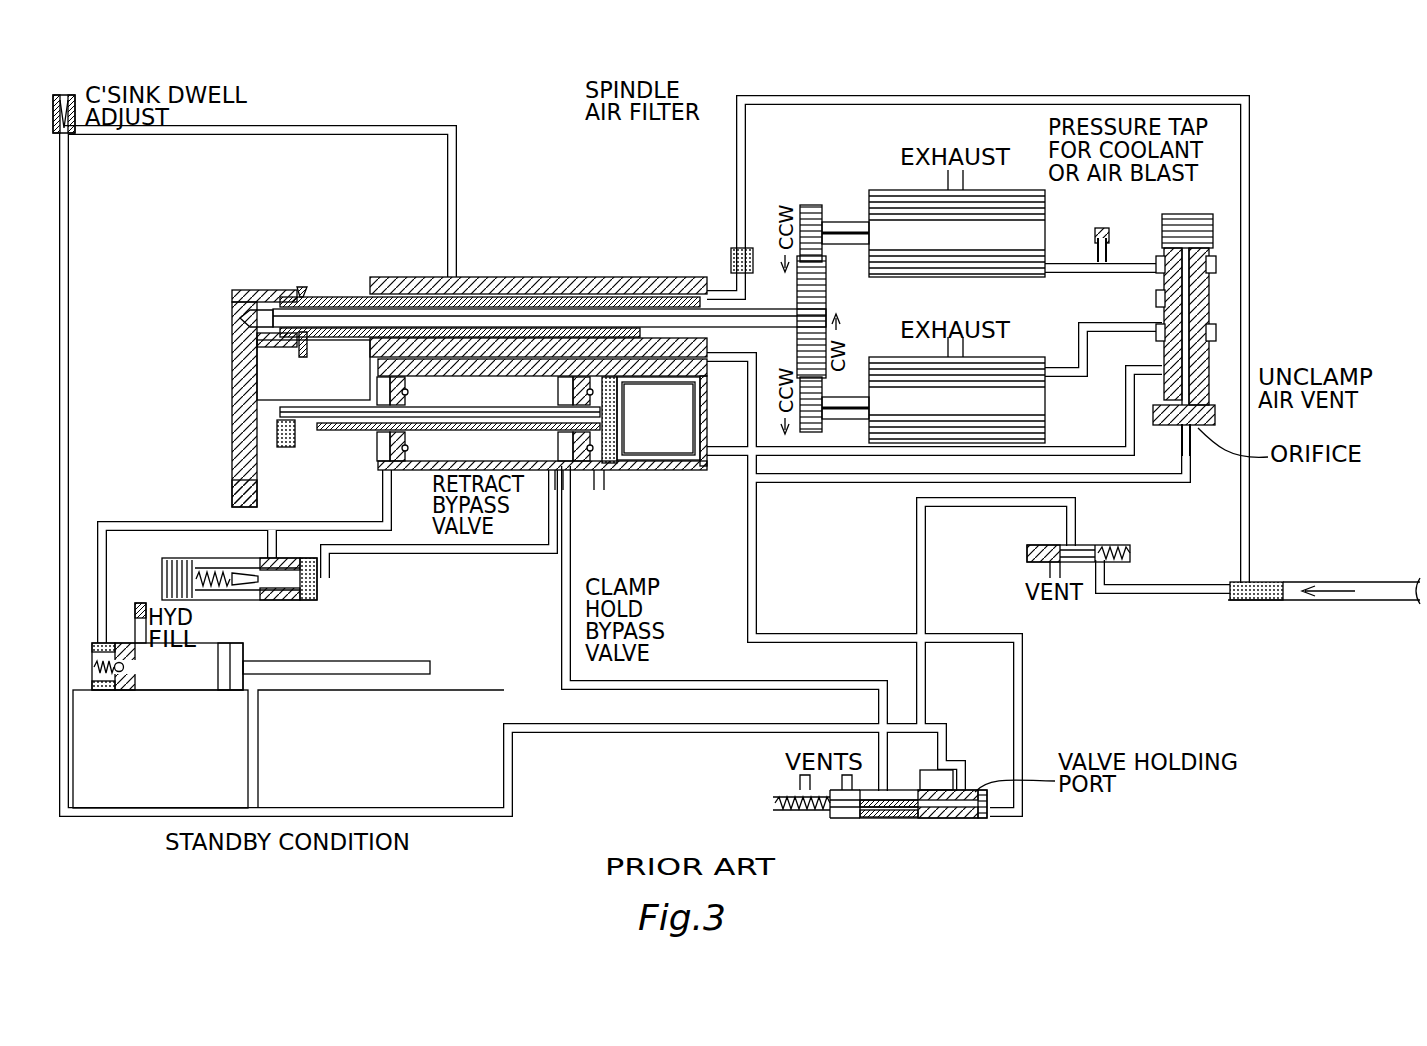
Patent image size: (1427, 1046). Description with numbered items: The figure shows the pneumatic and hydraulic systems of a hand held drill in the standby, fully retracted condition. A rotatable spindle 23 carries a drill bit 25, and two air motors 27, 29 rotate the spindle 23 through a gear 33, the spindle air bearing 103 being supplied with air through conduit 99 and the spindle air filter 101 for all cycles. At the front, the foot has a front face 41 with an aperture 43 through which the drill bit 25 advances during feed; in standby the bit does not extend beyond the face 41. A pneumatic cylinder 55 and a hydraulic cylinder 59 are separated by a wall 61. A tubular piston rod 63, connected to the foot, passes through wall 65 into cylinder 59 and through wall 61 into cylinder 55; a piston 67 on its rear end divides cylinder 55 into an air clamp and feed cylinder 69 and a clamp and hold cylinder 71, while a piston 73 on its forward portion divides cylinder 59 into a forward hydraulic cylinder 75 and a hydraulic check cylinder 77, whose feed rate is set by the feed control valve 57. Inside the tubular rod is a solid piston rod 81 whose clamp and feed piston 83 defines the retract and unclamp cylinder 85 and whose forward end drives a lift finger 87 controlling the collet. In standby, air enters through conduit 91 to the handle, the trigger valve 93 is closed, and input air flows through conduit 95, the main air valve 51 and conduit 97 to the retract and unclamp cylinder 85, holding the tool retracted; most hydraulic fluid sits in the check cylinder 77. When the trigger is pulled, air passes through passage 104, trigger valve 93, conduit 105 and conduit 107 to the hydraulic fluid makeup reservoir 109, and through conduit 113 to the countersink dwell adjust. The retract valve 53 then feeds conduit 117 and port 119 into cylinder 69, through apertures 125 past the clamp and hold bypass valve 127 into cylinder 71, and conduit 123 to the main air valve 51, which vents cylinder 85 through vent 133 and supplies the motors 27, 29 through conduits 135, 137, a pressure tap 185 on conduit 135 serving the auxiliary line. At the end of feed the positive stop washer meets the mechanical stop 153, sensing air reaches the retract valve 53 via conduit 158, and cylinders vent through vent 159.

The spindle 23 is at (440, 308).
The drill bit 25 is at (240, 318).
The air motor 27 is at (957, 223).
The air motor 29 is at (957, 390).
The gear 33 is at (828, 297).
The front face of the foot 41 is at (232, 356).
The aperture 43 is at (307, 288).
The main air valve 51 is at (1212, 246).
The retract valve 53 is at (893, 808).
The pneumatic cylinder 55 is at (707, 462).
The feed control valve 57 is at (325, 599).
The hydraulic cylinder 59 is at (413, 473).
The wall 61 is at (553, 557).
The tubular piston rod 63 is at (270, 407).
The wall 65 is at (377, 382).
The piston 67 is at (570, 440).
The air clamp and feed cylinder 69 is at (580, 380).
The clamp and hold cylinder 71 is at (655, 407).
The piston 73 is at (405, 455).
The forward hydraulic cylinder 75 is at (380, 467).
The hydraulic check cylinder 77 is at (507, 397).
The solid piston rod 81 is at (318, 425).
The clamp and feed piston 83 is at (628, 574).
The retract and unclamp cylinder 85 is at (688, 447).
The lift finger 87 is at (285, 425).
The conduit 91 is at (1324, 620).
The trigger valve 93 is at (1104, 538).
The conduit 95 is at (1252, 524).
The conduit 97 is at (1073, 448).
The conduit 99 is at (1252, 103).
The spindle air filter 101 is at (752, 247).
The spindle air bearing 103 is at (318, 298).
The passage 104 is at (1185, 595).
The conduit 105 is at (1040, 500).
The conduit 107 is at (672, 735).
The hydraulic fluid makeup reservoir 109 is at (288, 749).
The conduit 113 is at (130, 818).
The conduit 117 is at (735, 685).
The port 119 is at (622, 475).
The conduit 123 is at (968, 500).
The apertures 125 is at (590, 478).
The clamp and hold bypass valve 127 is at (724, 628).
The vent 133 is at (1246, 398).
The conduit 135 is at (1072, 273).
The conduit 137 is at (1083, 325).
The mechanical stop 153 is at (372, 286).
The conduit 158 is at (760, 599).
The vent 159 is at (855, 778).
The pressure tap 185 is at (1104, 228).